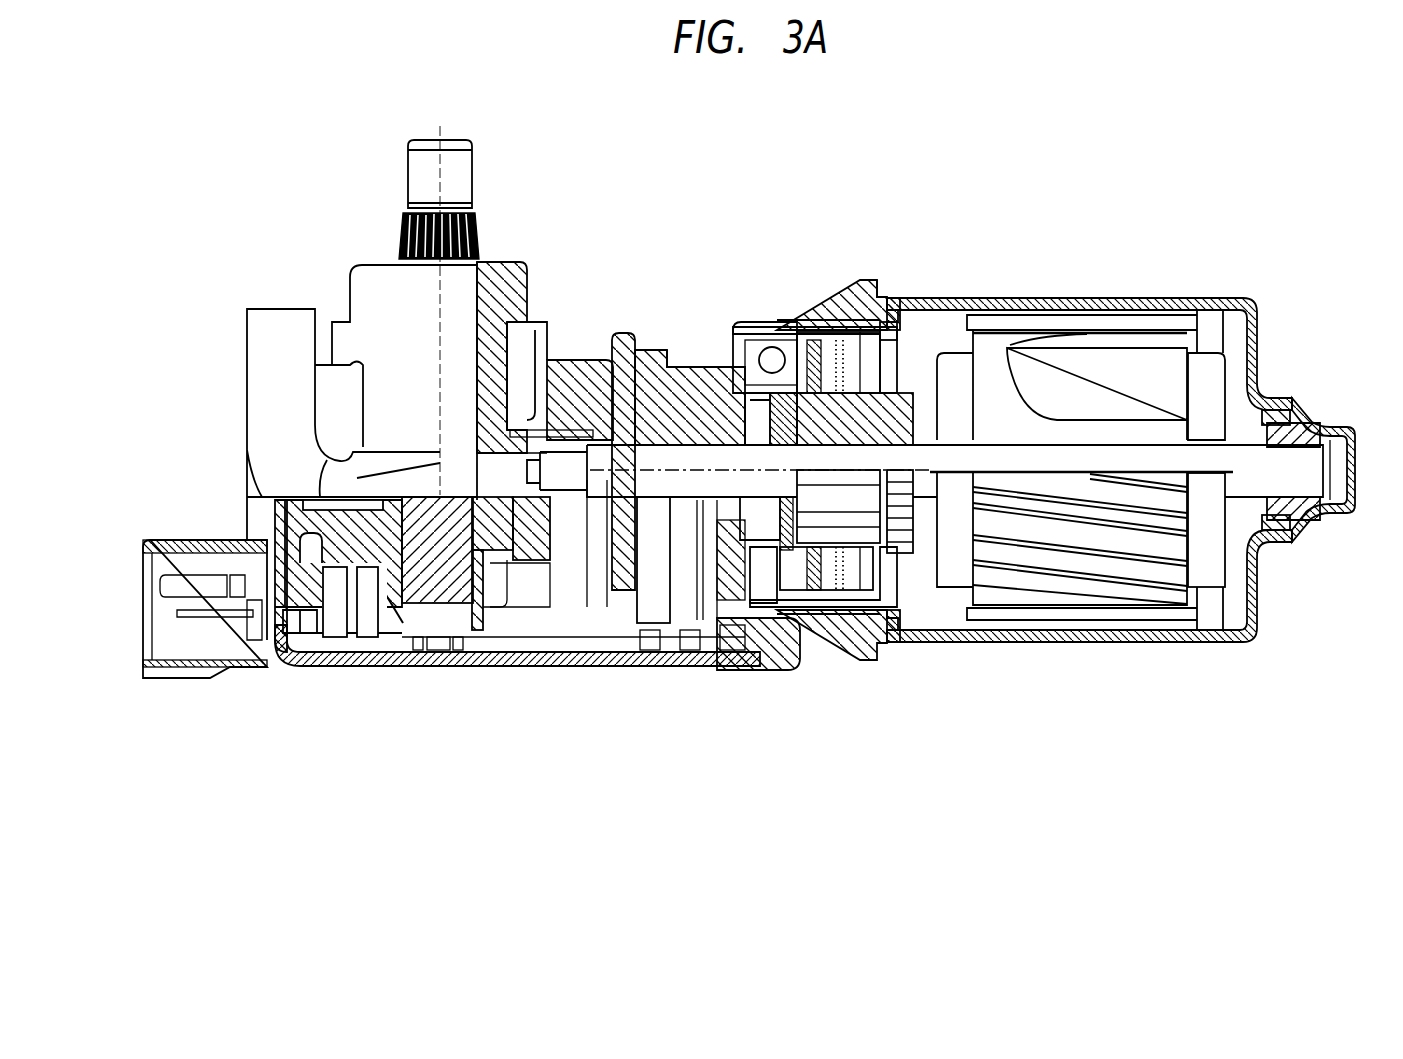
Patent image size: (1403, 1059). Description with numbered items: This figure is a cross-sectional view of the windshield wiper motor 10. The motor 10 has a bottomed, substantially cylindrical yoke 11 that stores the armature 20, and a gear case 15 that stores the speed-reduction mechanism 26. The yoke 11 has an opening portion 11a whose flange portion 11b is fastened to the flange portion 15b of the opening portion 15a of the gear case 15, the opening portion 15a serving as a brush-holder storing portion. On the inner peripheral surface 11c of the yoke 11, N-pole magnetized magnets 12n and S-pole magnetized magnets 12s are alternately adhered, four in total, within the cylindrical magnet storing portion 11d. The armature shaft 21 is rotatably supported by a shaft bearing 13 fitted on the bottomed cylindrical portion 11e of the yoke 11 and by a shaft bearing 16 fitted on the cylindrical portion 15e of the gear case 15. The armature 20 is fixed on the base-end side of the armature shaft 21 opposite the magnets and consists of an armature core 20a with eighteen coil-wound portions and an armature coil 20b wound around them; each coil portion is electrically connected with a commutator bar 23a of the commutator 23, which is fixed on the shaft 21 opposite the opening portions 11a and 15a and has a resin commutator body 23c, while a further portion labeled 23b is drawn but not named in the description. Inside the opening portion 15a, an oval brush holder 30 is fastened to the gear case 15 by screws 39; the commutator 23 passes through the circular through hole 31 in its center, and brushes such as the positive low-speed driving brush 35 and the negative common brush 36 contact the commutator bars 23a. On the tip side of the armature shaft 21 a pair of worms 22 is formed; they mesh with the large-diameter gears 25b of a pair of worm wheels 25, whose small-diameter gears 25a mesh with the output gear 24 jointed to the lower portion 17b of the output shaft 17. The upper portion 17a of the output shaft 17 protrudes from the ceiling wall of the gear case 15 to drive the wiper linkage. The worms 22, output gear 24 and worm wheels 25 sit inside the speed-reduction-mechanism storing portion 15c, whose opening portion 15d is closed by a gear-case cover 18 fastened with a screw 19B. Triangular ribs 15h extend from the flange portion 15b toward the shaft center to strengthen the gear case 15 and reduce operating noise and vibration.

The windshield wiper motor 10 is at (722, 728).
The yoke 11 is at (1134, 483).
The opening portion 11a is at (870, 642).
The flange portion 11b is at (883, 645).
The inner peripheral surface 11c is at (966, 323).
The magnet storing portion 11d is at (1210, 644).
The bottomed cylindrical portion 11e is at (1292, 405).
The S-pole magnetized magnet 12s is at (1097, 333).
The N-pole magnetized magnet 12n is at (1082, 618).
The shaft bearing 13 is at (1325, 424).
The gear case 15 is at (659, 348).
The opening portion 15a is at (902, 330).
The flange portion 15b is at (877, 323).
The speed-reduction-mechanism storing portion 15c is at (466, 630).
The opening portion 15d is at (694, 668).
The cylindrical portion 15e is at (689, 362).
The rib 15h is at (857, 323).
The shaft bearing 16 is at (625, 632).
The output shaft 17 is at (400, 224).
The upper portion 17a is at (474, 169).
The lower portion 17b is at (405, 638).
The gear-case cover 18 is at (323, 655).
The screw 19B is at (770, 645).
The armature 20 is at (1235, 358).
The armature core 20a is at (1145, 553).
The armature coil 20b is at (1218, 335).
The armature shaft 21 is at (1270, 505).
The worm 22 is at (522, 428).
The commutator 23 is at (905, 598).
The commutator bar 23a is at (912, 395).
The commutator riser 23b is at (935, 605).
The commutator body 23c is at (890, 330).
The output gear 24 is at (243, 440).
The worm wheel 25 is at (558, 637).
The small-diameter gear 25a is at (557, 622).
The large-diameter gear 25b is at (572, 448).
The speed-reduction mechanism 26 is at (552, 428).
The brush holder 30 is at (797, 330).
The through hole 31 is at (748, 372).
The low-speed driving brush 35 is at (837, 327).
The common brush 36 is at (815, 608).
The screw 39 is at (820, 328).